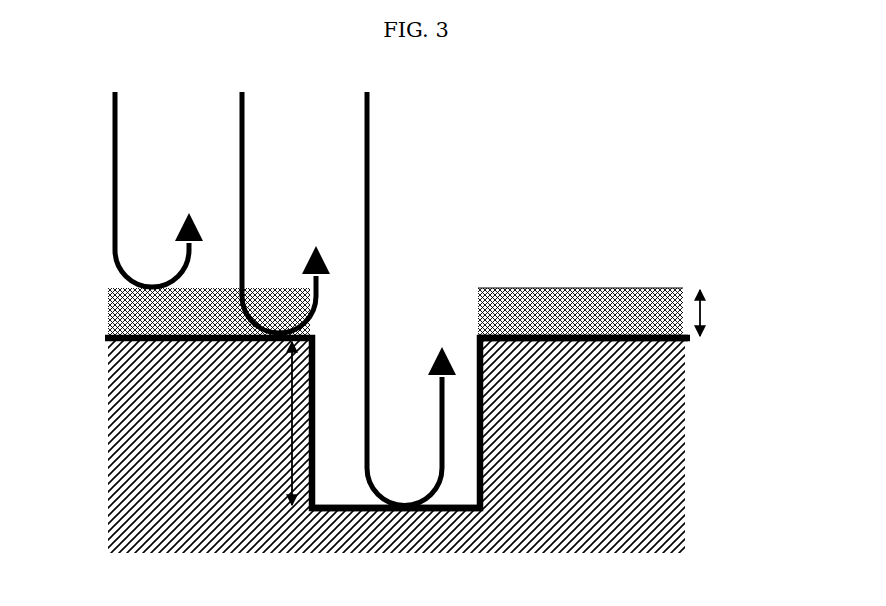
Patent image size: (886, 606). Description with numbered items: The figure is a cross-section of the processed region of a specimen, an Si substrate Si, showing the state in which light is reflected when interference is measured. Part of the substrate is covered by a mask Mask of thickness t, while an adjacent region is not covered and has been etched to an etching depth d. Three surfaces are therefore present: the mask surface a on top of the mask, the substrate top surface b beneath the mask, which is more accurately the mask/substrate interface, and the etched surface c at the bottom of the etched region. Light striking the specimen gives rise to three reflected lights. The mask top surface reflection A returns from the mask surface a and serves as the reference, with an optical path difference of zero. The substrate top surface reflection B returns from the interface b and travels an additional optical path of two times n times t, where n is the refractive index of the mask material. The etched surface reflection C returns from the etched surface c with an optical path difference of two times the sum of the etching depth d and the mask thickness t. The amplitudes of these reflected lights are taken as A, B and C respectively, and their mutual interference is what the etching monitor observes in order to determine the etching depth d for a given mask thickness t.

The Si substrate Si is at (655, 455).
The mask Mask is at (653, 315).
The mask surface a is at (608, 286).
The substrate top surface b is at (514, 330).
The etched surface c is at (340, 502).
The etching depth d is at (276, 423).
The mask thickness t is at (711, 313).
The mask top surface reflection A is at (159, 189).
The substrate top surface reflection B is at (286, 212).
The etched surface reflection C is at (411, 299).